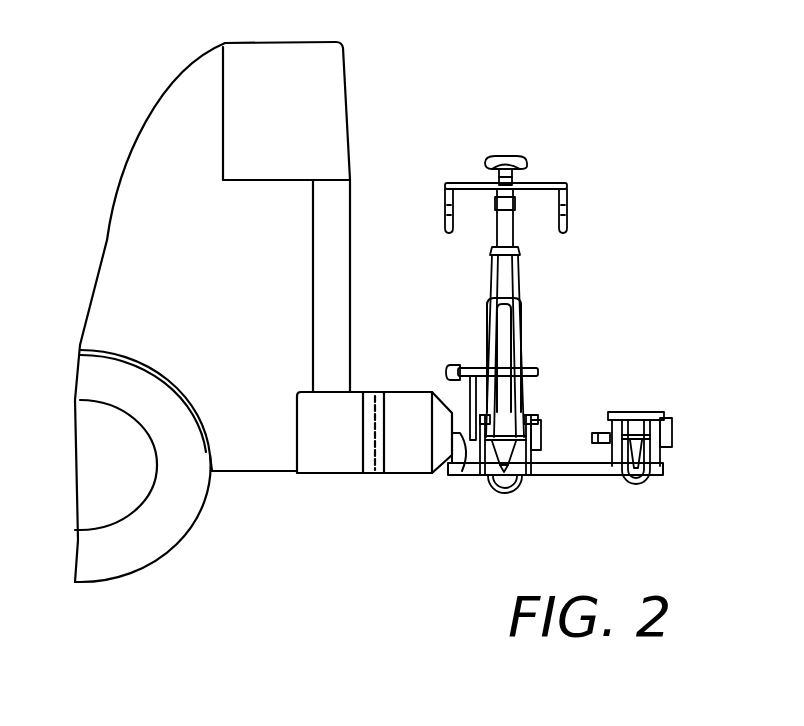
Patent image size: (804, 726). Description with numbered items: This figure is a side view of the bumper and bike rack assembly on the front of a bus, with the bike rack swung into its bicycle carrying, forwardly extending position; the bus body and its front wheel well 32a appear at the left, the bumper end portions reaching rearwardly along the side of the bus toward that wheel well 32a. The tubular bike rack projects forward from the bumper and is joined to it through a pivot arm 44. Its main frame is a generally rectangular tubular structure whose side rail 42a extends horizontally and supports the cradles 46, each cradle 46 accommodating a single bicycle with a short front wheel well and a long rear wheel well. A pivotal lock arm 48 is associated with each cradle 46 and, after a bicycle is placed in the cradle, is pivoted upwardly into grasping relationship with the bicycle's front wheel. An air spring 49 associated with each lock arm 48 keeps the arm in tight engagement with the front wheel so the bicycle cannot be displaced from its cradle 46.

The front wheel well 32a is at (139, 368).
The side rail 42a is at (556, 477).
The pivot arm 44 is at (463, 468).
The cradle 46 is at (533, 413).
The lock arm 48 is at (522, 300).
The air spring 49 is at (541, 434).